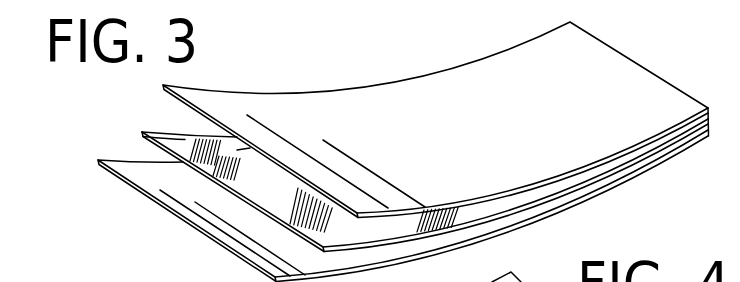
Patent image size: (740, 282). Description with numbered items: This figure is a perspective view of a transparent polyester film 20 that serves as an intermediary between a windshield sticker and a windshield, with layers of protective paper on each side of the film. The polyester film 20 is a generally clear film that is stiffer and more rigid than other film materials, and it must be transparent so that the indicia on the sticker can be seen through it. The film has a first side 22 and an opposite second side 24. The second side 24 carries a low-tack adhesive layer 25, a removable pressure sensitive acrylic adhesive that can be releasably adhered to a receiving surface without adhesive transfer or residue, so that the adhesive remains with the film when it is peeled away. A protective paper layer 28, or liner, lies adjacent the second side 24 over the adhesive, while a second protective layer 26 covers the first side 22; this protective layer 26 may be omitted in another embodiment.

The polyester film 20 is at (142, 129).
The first side 22 is at (182, 138).
The second side 24 is at (156, 141).
The low-tack adhesive layer 25 is at (378, 246).
The protective layer 26 is at (245, 98).
The protective paper layer 28 is at (267, 258).